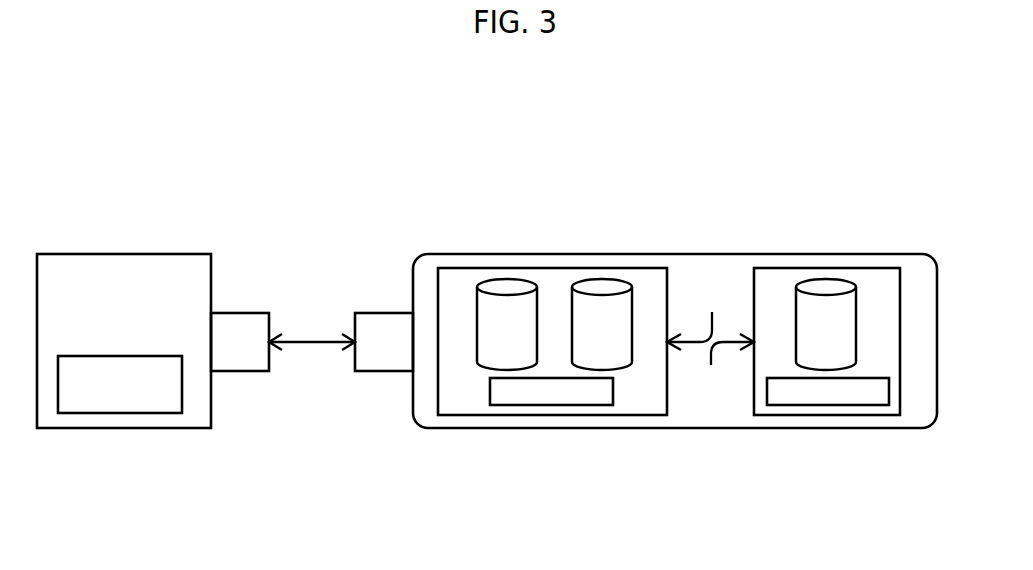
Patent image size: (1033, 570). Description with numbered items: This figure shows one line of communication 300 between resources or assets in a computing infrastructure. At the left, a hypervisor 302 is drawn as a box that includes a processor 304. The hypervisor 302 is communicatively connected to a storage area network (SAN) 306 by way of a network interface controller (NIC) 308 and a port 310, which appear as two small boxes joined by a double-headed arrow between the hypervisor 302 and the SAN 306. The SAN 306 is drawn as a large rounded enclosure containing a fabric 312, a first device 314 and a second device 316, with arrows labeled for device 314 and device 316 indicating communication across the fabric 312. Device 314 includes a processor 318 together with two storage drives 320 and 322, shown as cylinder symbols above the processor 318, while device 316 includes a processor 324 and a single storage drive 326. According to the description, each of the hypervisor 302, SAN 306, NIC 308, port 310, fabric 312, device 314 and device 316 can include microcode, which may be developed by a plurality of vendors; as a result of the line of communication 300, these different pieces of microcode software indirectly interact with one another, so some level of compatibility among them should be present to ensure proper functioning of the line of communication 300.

The line of communication 300 is at (407, 197).
The hypervisor 302 is at (65, 241).
The processor 304 is at (80, 356).
The storage area network (SAN) 306 is at (709, 241).
The network interface controller (NIC) 308 is at (240, 313).
The port 310 is at (385, 371).
The fabric 312 is at (713, 428).
The device 314 is at (696, 313).
The device 316 is at (724, 368).
The processor 318 is at (552, 405).
The storage drive 320 is at (507, 287).
The storage drive 322 is at (602, 287).
The processor 324 is at (826, 405).
The storage drive 326 is at (826, 287).